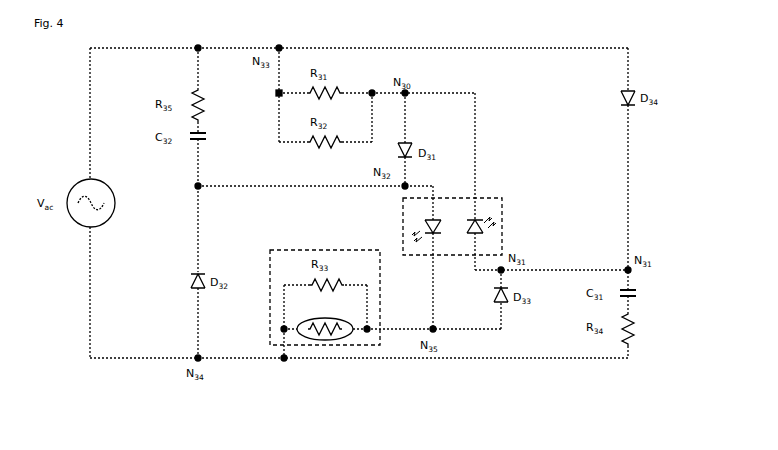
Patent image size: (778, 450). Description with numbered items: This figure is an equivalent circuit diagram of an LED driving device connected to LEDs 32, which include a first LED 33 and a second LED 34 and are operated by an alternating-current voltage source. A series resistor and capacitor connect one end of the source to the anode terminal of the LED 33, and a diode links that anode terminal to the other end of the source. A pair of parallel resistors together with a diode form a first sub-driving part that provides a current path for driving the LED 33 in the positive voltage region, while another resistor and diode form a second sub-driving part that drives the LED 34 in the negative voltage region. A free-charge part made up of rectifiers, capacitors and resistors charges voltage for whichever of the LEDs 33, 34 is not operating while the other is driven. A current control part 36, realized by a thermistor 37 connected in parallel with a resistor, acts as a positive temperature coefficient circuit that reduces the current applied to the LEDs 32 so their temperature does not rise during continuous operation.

The LEDs 32 is at (502, 199).
The LED 33 is at (420, 225).
The LED 34 is at (483, 232).
The current control part 36 is at (298, 250).
The thermistor 37 is at (322, 340).